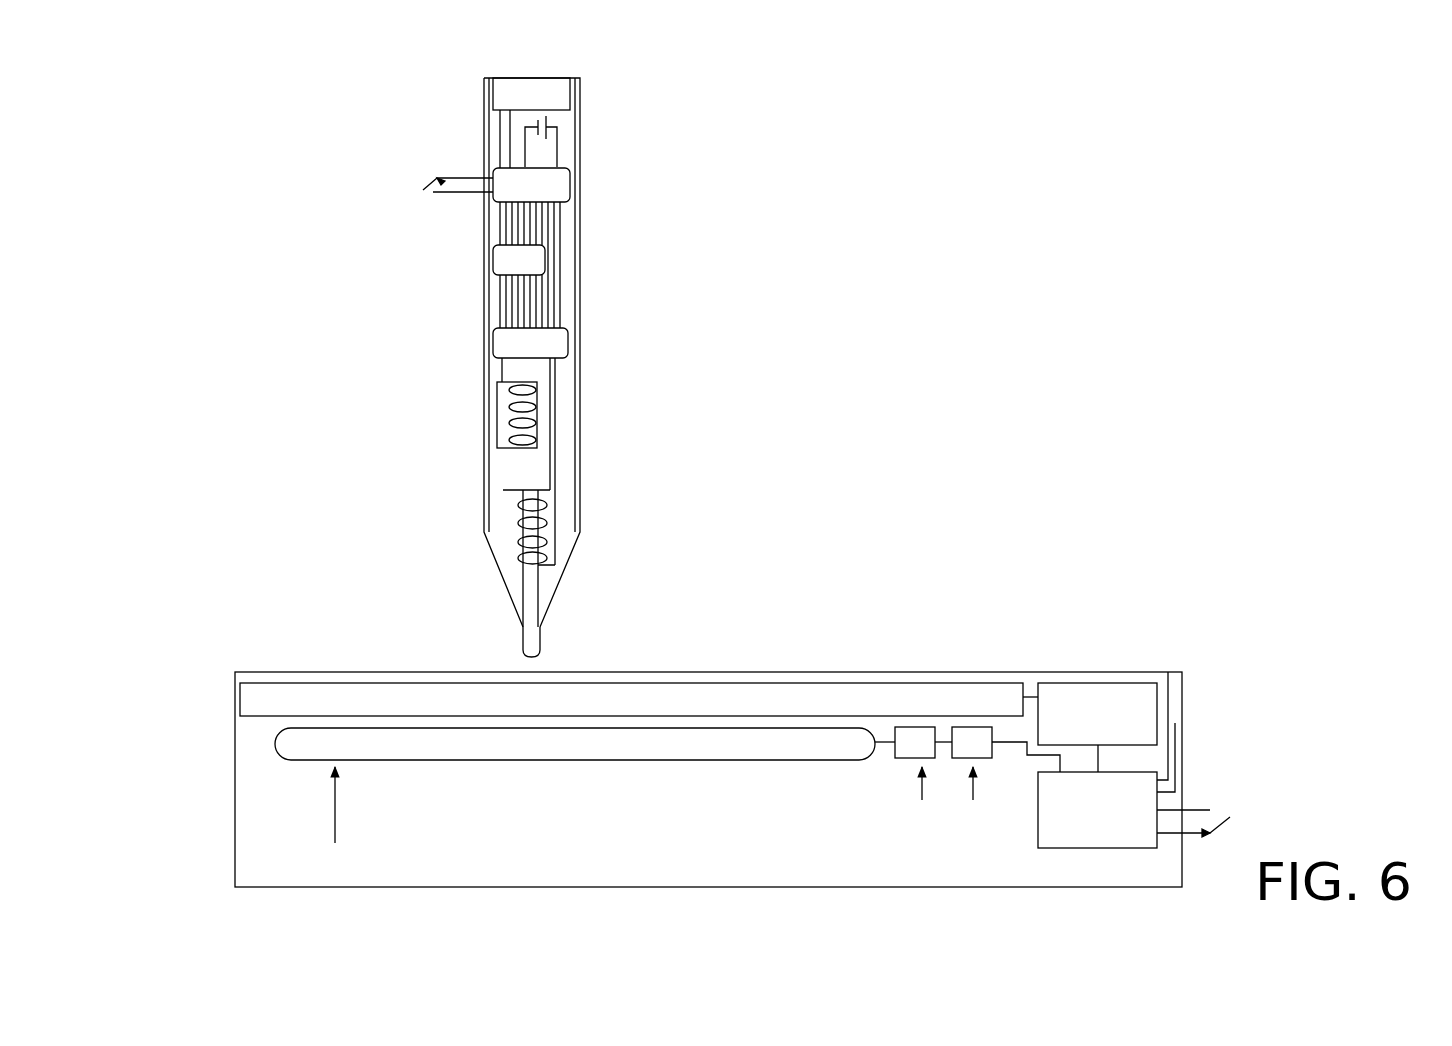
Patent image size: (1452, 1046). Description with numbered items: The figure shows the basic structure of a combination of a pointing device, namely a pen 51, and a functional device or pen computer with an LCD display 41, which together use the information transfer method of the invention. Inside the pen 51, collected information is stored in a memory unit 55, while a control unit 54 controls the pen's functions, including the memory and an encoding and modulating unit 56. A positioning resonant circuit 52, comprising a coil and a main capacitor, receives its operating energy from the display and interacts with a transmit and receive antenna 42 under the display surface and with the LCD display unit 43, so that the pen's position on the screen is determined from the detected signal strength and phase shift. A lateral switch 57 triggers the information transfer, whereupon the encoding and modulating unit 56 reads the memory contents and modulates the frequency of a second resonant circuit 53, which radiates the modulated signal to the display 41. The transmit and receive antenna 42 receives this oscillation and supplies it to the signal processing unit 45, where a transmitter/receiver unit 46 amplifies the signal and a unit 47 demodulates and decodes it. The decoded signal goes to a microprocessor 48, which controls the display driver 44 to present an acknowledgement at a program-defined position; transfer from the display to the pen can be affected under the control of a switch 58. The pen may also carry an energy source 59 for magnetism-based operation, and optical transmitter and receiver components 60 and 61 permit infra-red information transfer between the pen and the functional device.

The LCD display 41 is at (341, 672).
The transmit and receive antenna 42 is at (570, 805).
The LCD display unit 43 is at (639, 699).
The display driver 44 is at (1053, 683).
The signal processing unit 45 is at (858, 857).
The transmitter/receiver unit 46 is at (666, 763).
The demodulating and decoding unit 47 is at (791, 785).
The microprocessor 48 is at (1097, 810).
The pen 51 is at (440, 242).
The positioning resonant circuit 52 is at (562, 517).
The second resonant circuit 53 is at (493, 378).
The control unit 54 is at (570, 171).
The memory unit 55 is at (545, 260).
The encoding and modulating unit 56 is at (568, 345).
The lateral switch 57 is at (453, 168).
The switch 58 is at (1172, 798).
The energy source 59 is at (557, 134).
The optical transmitter and receiver component 60 is at (540, 87).
The optical transmitter and receiver component 61 is at (1177, 687).